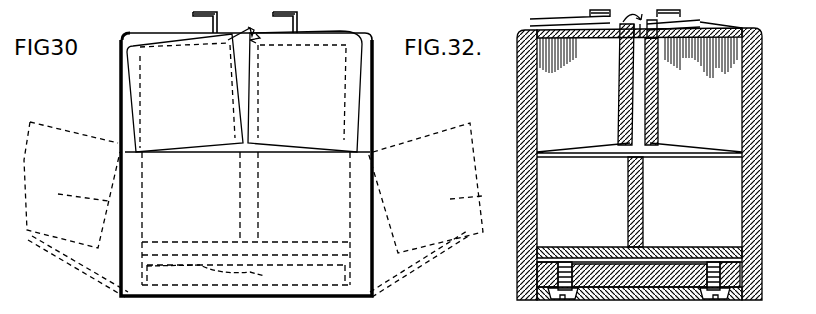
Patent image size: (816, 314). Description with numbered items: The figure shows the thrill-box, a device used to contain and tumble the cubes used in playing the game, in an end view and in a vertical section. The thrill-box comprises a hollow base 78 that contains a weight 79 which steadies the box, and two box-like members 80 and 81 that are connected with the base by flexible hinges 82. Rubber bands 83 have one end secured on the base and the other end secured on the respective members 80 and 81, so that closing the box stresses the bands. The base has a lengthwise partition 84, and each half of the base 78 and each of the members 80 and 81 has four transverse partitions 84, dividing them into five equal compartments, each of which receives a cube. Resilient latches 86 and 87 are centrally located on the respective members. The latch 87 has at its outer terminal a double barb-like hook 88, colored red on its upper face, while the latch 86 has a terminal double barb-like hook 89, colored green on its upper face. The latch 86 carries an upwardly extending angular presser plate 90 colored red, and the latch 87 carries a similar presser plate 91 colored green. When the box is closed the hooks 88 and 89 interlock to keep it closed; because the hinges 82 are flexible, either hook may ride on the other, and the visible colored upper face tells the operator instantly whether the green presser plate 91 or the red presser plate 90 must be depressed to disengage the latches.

In FIG. 30, the hollow base 78 is at (300, 234).
In FIG. 32, the hollow base 78 is at (747, 241).
In FIG. 30, the weight 79 is at (218, 274).
In FIG. 32, the weight 79 is at (537, 281).
In FIG. 30, the box-like member 80 is at (213, 132).
In FIG. 32, the box-like member 80 is at (537, 113).
In FIG. 30, the box-like member 81 is at (299, 132).
In FIG. 32, the box-like member 81 is at (752, 97).
In FIG. 32, the flexible hinges 82 is at (524, 150).
In FIG. 30, the rubber bands 83 is at (117, 107).
In FIG. 30, the partition 84 is at (253, 210).
In FIG. 32, the partition 84 is at (561, 84).
In FIG. 32, the resilient latch 86 is at (619, 40).
In FIG. 32, the resilient latch 87 is at (670, 48).
In FIG. 30, the double barb-like hook 88 is at (237, 40).
In FIG. 32, the double barb-like hook 88 is at (635, 46).
In FIG. 30, the double barb-like hook 89 is at (232, 30).
In FIG. 32, the double barb-like hook 89 is at (623, 44).
In FIG. 30, the presser plate 90 is at (203, 15).
In FIG. 32, the presser plate 90 is at (592, 13).
In FIG. 30, the presser plate 91 is at (293, 15).
In FIG. 32, the presser plate 91 is at (728, 60).